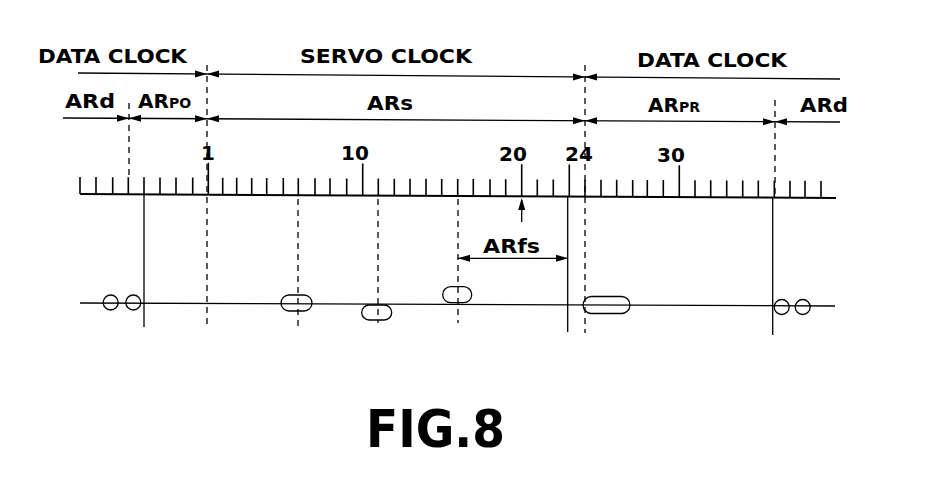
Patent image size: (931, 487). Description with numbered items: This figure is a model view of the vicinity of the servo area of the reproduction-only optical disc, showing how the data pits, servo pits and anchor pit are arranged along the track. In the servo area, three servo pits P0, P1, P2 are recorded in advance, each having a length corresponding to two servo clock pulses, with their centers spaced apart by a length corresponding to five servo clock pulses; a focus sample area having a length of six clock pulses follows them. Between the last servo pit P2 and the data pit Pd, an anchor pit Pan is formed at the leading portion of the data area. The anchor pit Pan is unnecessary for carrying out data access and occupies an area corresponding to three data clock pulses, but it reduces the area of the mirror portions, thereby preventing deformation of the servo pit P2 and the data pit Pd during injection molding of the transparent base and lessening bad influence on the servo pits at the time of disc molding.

The servo pit P0 is at (303, 295).
The servo pit P1 is at (380, 305).
The servo pit P2 is at (465, 303).
The anchor pit Pan is at (610, 314).
The data pit Pd is at (782, 315).